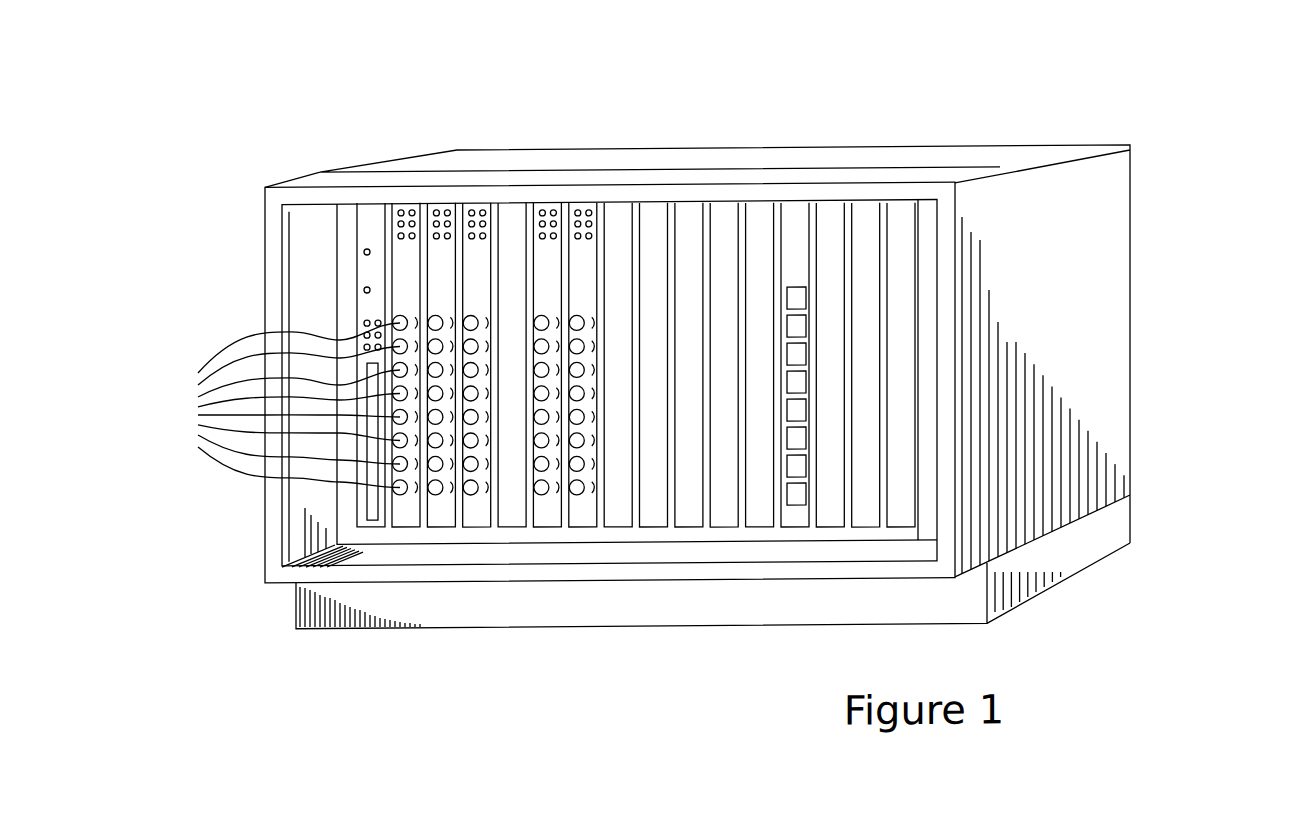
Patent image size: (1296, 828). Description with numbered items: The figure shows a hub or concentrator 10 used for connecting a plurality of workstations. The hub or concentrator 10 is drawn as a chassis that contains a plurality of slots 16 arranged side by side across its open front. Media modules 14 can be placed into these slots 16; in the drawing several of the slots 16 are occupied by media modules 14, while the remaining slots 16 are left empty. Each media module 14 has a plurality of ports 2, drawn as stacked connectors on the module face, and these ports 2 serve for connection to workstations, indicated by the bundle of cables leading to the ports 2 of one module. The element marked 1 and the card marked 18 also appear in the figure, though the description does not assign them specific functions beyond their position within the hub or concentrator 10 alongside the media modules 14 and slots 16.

The switch 1 is at (792, 221).
The ports 2 is at (286, 406).
The hub or concentrator 10 is at (1132, 261).
The media modules 14 is at (405, 516).
The slots 16 is at (507, 227).
The management card 18 is at (369, 221).